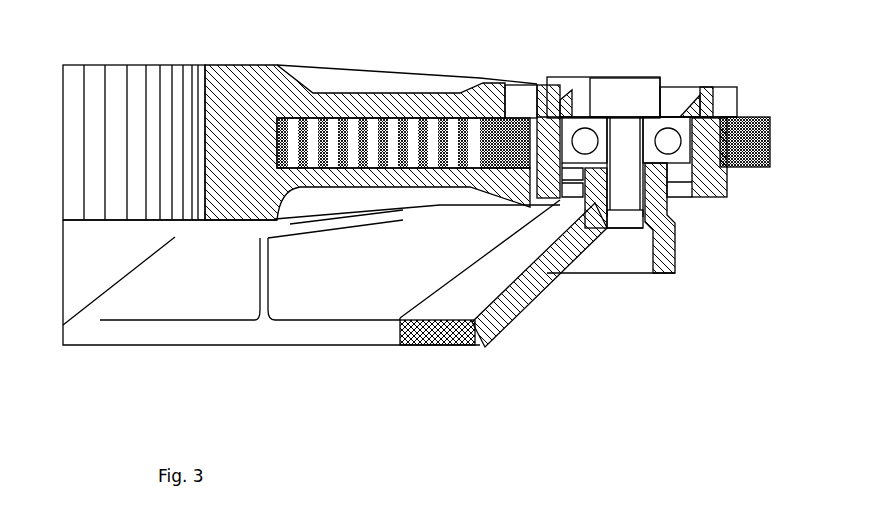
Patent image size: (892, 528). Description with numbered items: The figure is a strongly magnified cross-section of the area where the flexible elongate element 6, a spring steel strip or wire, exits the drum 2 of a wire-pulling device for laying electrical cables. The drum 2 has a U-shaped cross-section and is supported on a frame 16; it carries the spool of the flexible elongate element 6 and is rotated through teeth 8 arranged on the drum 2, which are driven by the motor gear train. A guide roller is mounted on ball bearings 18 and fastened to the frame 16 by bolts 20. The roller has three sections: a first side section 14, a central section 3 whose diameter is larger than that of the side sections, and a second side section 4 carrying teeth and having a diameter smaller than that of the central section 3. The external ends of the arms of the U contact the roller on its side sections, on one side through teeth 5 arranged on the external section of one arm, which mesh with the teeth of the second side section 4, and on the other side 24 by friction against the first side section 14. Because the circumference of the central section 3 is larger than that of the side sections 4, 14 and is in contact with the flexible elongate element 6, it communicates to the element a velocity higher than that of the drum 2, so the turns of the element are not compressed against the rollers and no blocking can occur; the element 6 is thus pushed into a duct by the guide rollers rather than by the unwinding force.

The drum 2 is at (245, 130).
The central section 3 is at (747, 150).
The second side section 4 is at (723, 108).
The teeth 5 is at (513, 98).
The flexible elongate element 6 is at (383, 117).
The teeth 8 is at (152, 130).
The first side section 14 is at (555, 190).
The frame 16 is at (263, 340).
The ball bearings 18 is at (584, 128).
The bolts 20 is at (620, 190).
The other side 24 is at (523, 182).